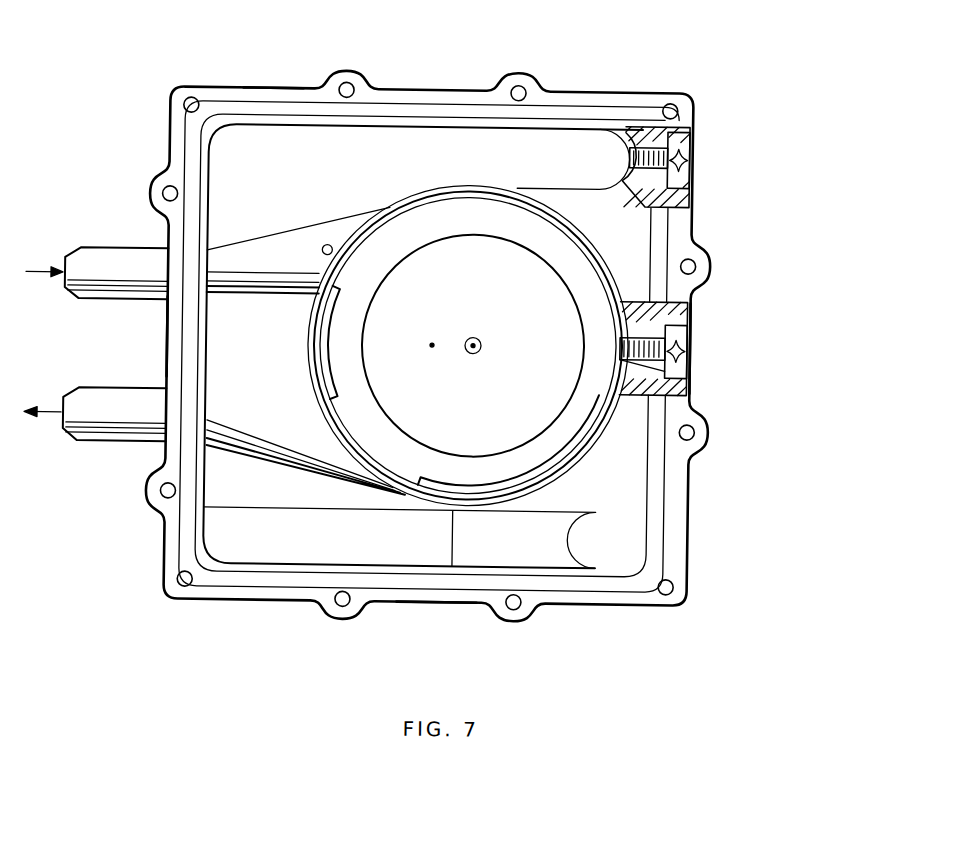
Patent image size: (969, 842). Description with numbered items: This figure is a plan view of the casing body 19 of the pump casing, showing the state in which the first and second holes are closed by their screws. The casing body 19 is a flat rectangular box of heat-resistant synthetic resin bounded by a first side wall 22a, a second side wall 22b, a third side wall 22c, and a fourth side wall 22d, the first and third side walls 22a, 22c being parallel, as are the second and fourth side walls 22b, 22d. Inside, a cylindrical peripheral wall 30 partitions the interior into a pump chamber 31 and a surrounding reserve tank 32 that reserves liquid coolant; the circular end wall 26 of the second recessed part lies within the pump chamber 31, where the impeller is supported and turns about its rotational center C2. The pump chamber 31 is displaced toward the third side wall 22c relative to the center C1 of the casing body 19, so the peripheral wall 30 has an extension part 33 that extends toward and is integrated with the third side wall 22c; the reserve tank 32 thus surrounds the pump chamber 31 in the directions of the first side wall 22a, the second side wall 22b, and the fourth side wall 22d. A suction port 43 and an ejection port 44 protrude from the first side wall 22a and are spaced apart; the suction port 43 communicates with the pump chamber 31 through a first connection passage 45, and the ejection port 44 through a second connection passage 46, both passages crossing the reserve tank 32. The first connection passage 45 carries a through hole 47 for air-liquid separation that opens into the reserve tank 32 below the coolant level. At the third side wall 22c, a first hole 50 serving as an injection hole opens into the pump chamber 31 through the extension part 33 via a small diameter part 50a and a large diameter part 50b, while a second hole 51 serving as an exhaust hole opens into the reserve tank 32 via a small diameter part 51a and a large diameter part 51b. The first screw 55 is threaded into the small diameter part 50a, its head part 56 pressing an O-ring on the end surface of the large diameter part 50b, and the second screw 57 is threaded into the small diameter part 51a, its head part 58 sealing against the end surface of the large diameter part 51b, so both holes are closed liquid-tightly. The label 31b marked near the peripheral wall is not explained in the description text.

The casing body 19 is at (170, 552).
The first side wall 22a is at (182, 340).
The second side wall 22b is at (444, 603).
The third side wall 22c is at (677, 217).
The fourth side wall 22d is at (301, 91).
The end wall 26 is at (431, 419).
The peripheral wall 30 is at (444, 500).
The pump chamber 31 is at (597, 427).
The annular flange 31b is at (391, 234).
The reserve tank 32 is at (423, 138).
The extension part 33 is at (616, 370).
The suction port 43 is at (116, 255).
The ejection port 44 is at (119, 432).
The first connection passage 45 is at (241, 263).
The second connection passage 46 is at (244, 433).
The through hole 47 is at (321, 258).
The first hole 50 is at (672, 373).
The small diameter part 50a is at (680, 381).
The large diameter part 50b is at (690, 364).
The second hole 51 is at (647, 106).
The small diameter part 51a is at (652, 137).
The large diameter part 51b is at (685, 128).
The first screw 55 is at (618, 347).
The head part 56 is at (690, 341).
The second screw 57 is at (627, 155).
The head part 58 is at (689, 148).
The center of the casing body C1 is at (432, 340).
The rotational center of the impeller C2 is at (481, 338).